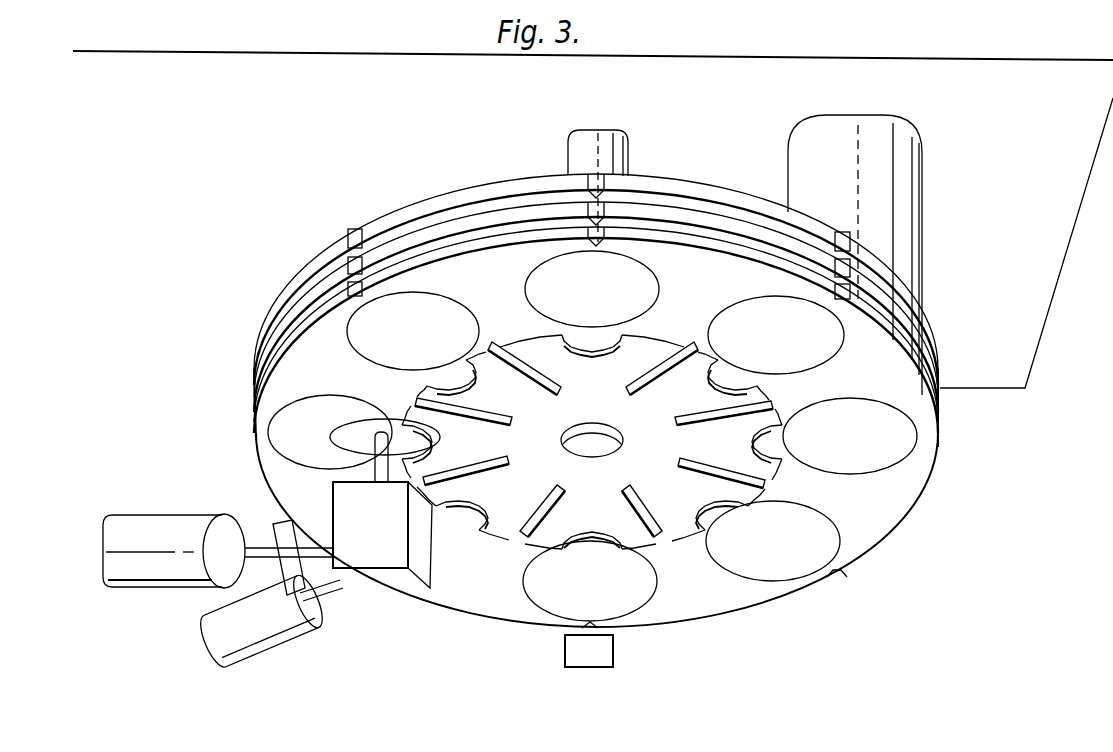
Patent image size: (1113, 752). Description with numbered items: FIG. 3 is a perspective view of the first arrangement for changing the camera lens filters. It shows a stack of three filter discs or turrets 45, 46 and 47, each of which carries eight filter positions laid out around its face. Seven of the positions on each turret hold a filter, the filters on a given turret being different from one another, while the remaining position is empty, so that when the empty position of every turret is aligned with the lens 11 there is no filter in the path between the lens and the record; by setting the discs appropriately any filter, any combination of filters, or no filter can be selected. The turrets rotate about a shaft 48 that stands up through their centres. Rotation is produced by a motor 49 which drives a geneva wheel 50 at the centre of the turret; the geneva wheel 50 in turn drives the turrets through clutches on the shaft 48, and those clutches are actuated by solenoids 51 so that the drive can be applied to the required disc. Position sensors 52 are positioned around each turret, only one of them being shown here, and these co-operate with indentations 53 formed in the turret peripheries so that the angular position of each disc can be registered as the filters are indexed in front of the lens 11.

The lens 11 is at (900, 183).
The filter disc or turret 45 is at (908, 348).
The filter disc or turret 46 is at (910, 328).
The filter disc or turret 47 is at (920, 316).
The shaft 48 is at (571, 152).
The motor 49 is at (140, 530).
The geneva wheel 50 is at (606, 403).
The solenoid 51 is at (210, 636).
The position sensor 52 is at (566, 652).
The indentation 53 is at (356, 229).